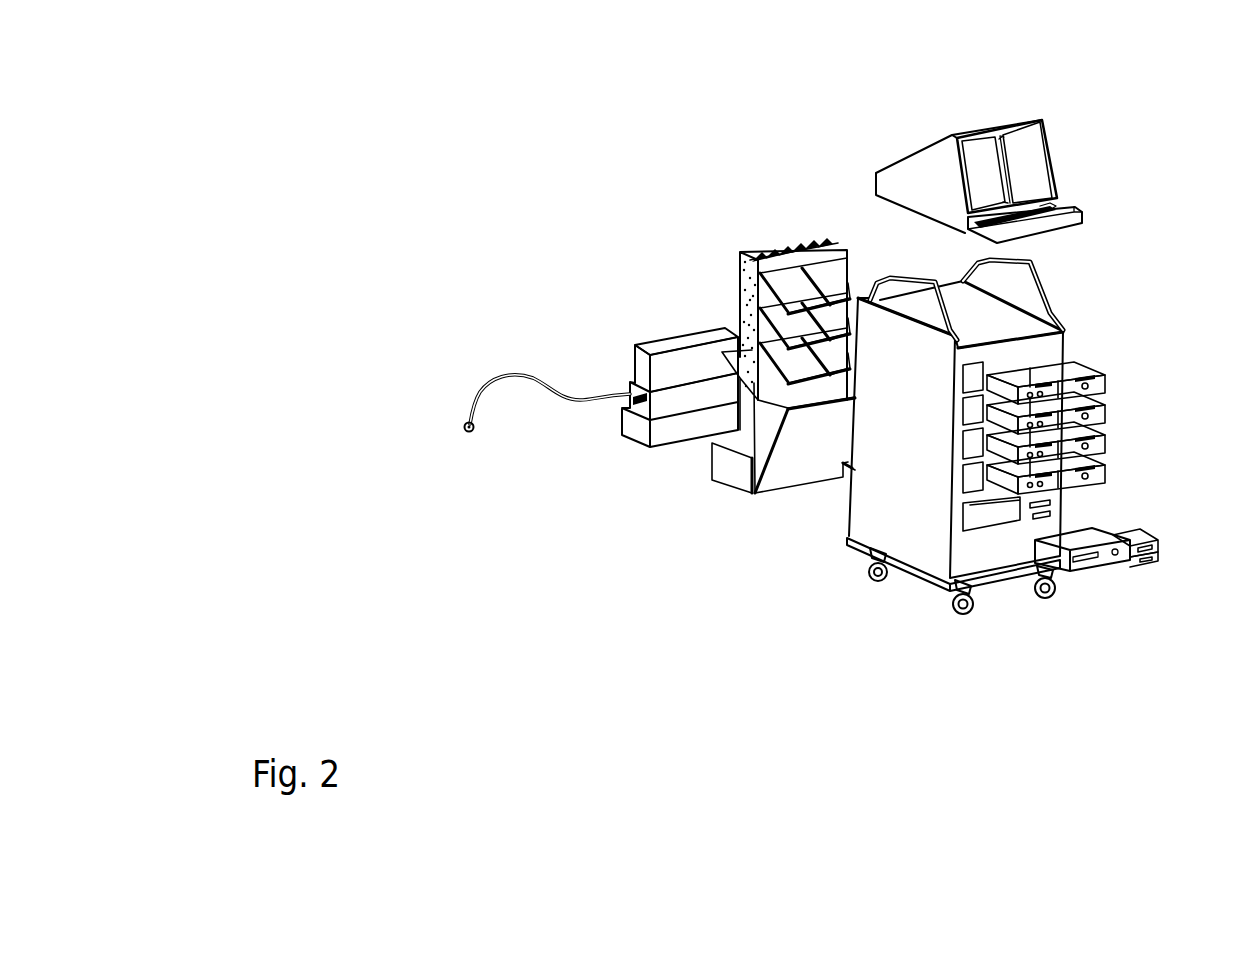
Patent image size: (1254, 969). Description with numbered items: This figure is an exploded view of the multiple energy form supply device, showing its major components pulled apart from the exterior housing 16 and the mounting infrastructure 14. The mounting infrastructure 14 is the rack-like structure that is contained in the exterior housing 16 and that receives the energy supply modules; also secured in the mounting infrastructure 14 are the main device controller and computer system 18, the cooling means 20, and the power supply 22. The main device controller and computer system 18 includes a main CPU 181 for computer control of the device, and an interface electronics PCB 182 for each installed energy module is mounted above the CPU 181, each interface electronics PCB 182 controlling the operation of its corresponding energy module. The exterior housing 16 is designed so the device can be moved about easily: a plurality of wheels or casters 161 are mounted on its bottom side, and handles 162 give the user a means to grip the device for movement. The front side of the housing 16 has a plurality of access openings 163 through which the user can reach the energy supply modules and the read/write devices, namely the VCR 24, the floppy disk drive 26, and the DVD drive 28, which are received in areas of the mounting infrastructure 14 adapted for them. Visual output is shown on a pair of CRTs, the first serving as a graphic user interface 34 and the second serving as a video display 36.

The mounting infrastructure 14 is at (832, 267).
The exterior housing 16 is at (875, 510).
The main device controller and computer system 18 is at (576, 330).
The cooling means 20 is at (630, 393).
The power supply 22 is at (620, 428).
The VCR 24 is at (1110, 558).
The floppy disk drive 26 is at (1153, 551).
The DVD drive 28 is at (1147, 533).
The graphic user interface (GUI) 34 is at (980, 157).
The video display 36 is at (1025, 148).
The wheels or casters 161 is at (950, 607).
The handles 162 is at (1047, 287).
The access openings 163 is at (1073, 360).
The main CPU 181 is at (667, 360).
The interface electronics PCB 182 is at (778, 248).